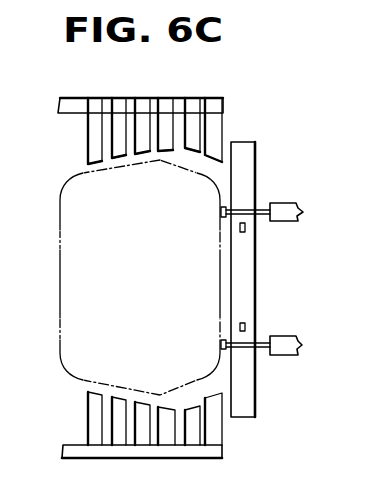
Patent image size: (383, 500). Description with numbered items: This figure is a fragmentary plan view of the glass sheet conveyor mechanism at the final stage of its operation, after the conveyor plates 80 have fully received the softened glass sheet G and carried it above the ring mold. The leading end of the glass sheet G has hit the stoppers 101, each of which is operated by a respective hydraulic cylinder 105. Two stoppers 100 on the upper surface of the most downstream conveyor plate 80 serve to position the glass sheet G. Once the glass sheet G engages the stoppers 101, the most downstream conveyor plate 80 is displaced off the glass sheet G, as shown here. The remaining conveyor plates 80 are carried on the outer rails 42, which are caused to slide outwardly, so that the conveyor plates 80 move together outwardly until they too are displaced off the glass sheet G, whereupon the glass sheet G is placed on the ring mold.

The outer rails 42 is at (73, 105).
The conveyor plates 80 is at (215, 138).
The stoppers 101 is at (228, 208).
The hydraulic cylinders 105 is at (300, 217).
The stoppers 100 is at (243, 232).
The glass sheet G is at (78, 282).